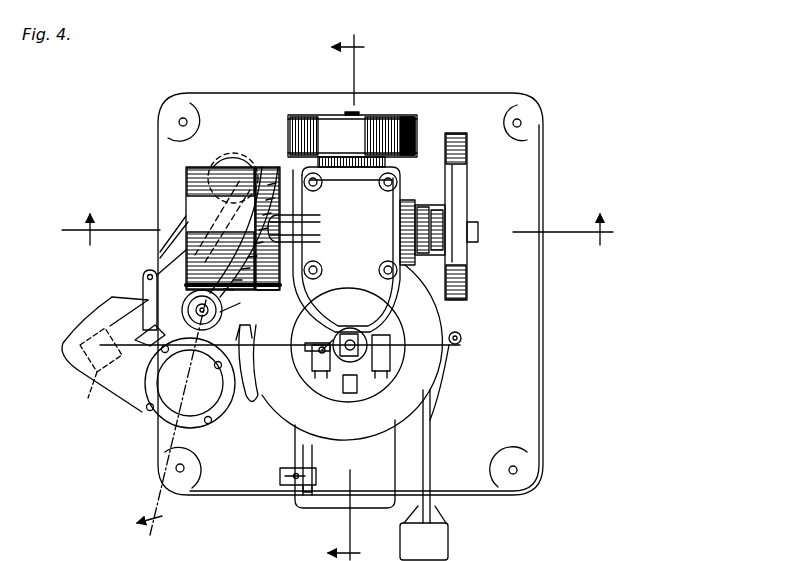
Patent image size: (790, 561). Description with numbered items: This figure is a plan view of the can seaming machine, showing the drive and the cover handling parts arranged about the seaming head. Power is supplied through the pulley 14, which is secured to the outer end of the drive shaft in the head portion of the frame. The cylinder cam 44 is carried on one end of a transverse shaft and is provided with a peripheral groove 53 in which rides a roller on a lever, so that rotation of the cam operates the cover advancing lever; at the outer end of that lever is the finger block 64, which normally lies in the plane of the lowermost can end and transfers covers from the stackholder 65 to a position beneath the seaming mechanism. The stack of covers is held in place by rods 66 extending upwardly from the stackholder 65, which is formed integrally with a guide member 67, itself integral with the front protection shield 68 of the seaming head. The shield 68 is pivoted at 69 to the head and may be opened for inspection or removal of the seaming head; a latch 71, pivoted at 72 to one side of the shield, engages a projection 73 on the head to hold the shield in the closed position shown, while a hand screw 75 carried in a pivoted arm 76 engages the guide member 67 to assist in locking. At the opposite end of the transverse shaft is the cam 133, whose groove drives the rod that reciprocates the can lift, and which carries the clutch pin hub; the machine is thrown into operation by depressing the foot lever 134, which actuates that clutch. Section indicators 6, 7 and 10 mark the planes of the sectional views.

The pulley 14 is at (406, 114).
The cylinder cam 44 is at (198, 172).
The peripheral groove 53 is at (266, 178).
The cam 133 is at (452, 190).
The foot lever 134 is at (437, 548).
The finger block 64 is at (105, 358).
The stackholder 65 is at (225, 420).
The rods 66 is at (150, 415).
The guide member 67 is at (262, 440).
The front protection shield 68 is at (410, 395).
The pivot 69 is at (461, 340).
The latch 71 is at (252, 400).
The pivot 72 is at (238, 355).
The projection 73 is at (248, 340).
The hand screw 75 is at (148, 330).
The pivoted arm 76 is at (150, 302).
The section line 6 is at (349, 298).
The section line 7 is at (195, 415).
The section line 10 is at (337, 218).